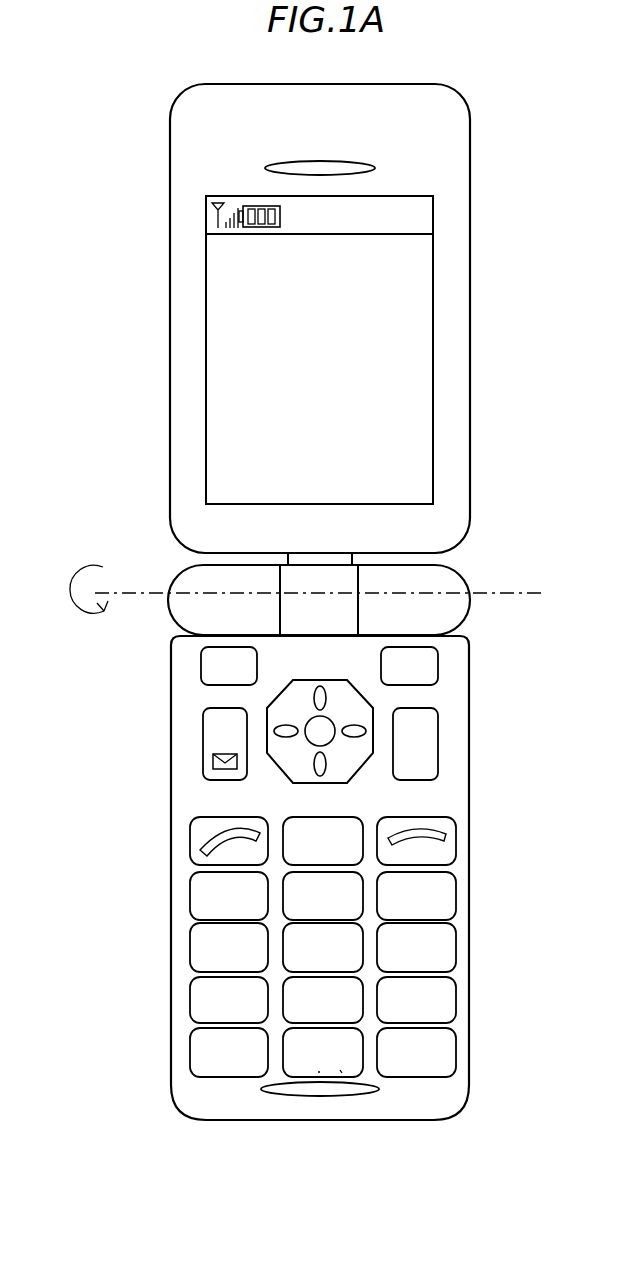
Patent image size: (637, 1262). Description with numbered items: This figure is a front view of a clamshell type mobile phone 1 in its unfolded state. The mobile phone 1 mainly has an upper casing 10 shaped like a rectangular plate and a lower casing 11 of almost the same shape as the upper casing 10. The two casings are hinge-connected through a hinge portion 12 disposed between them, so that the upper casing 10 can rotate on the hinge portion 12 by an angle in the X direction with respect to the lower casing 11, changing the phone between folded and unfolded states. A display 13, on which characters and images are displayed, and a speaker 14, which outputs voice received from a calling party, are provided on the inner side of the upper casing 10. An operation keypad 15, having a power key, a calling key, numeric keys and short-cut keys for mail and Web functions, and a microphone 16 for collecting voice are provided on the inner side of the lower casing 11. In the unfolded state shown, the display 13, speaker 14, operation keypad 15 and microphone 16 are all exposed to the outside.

The mobile phone 1 is at (313, 634).
The upper casing 10 is at (363, 318).
The lower casing 11 is at (315, 910).
The hinge portion 12 is at (470, 570).
The display 13 is at (418, 388).
The speaker 14 is at (376, 168).
The operation keypad 15 is at (150, 663).
The microphone 16 is at (380, 1089).